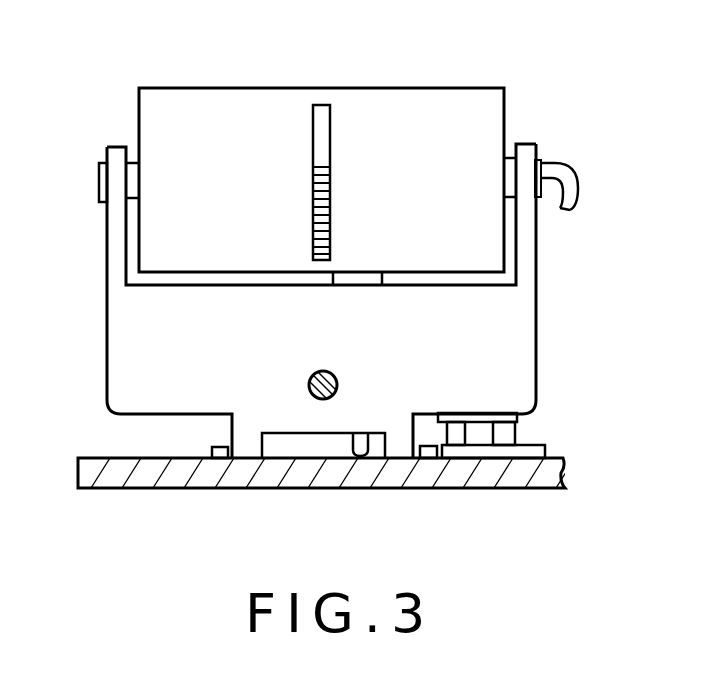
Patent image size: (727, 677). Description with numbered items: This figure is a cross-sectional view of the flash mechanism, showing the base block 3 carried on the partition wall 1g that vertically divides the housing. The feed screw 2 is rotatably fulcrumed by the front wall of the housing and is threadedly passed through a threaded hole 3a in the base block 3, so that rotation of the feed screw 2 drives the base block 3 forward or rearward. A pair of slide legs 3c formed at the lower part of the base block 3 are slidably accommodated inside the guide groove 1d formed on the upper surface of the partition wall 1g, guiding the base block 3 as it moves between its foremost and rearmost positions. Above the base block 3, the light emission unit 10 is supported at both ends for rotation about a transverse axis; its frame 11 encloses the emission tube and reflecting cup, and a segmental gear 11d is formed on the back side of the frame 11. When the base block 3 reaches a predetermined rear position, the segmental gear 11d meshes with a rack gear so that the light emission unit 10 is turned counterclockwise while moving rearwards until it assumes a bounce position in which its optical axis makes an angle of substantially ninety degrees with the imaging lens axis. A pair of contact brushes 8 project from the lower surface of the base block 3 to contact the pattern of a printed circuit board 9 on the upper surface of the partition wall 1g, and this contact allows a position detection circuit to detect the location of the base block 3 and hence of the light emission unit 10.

The guide groove 1d is at (313, 447).
The partition wall 1g is at (496, 472).
The feed screw 2 is at (338, 382).
The base block 3 is at (118, 327).
The threaded hole 3a is at (309, 388).
The slide legs 3c is at (247, 453).
The contact brushes 8 is at (454, 428).
The printed circuit board 9 is at (533, 452).
The light emission unit 10 is at (167, 86).
The frame 11 is at (264, 102).
The segmental gear 11d is at (325, 148).